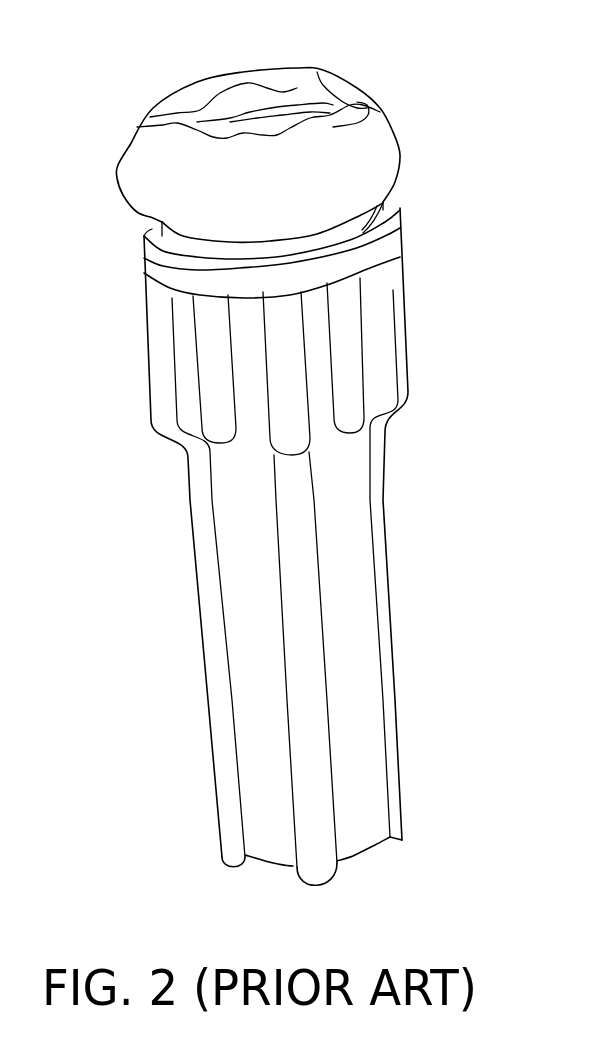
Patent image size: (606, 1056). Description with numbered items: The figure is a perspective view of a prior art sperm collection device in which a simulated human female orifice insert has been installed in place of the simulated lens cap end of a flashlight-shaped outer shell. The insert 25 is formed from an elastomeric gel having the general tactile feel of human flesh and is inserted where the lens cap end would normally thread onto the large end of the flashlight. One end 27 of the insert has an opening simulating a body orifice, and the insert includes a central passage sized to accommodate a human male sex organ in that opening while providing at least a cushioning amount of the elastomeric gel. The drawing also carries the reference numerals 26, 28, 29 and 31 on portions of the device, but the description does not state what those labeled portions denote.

The insert 25 is at (144, 266).
The shaft tip 26 is at (355, 840).
The end of the insert 27 is at (370, 160).
The cap texture 28 is at (270, 98).
The shaft ribs 29 is at (407, 350).
The slots 31 is at (380, 292).